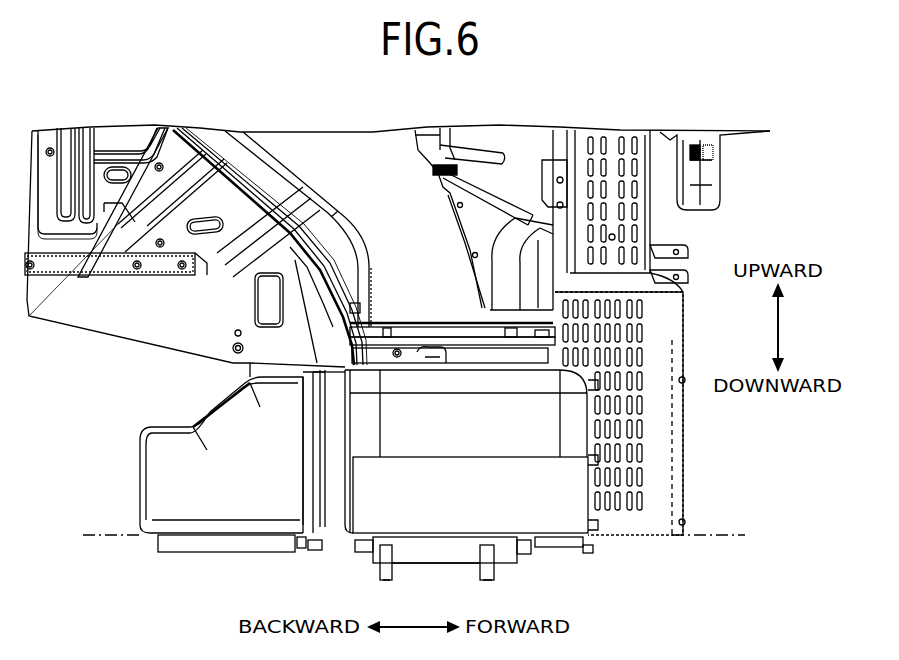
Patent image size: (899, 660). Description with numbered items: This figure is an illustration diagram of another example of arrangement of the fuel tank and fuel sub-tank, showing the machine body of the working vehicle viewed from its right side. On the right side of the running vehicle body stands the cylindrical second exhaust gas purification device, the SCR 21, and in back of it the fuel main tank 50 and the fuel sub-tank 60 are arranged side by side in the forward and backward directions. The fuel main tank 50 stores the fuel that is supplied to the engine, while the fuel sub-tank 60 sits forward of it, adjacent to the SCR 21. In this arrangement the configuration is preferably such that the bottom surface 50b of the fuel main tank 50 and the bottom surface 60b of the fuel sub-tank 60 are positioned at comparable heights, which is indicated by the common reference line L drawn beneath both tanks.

The second exhaust gas purification device (SCR) 21 is at (672, 417).
The fuel tank (fuel main tank) 50 is at (180, 421).
The bottom surface of the fuel main tank 50b is at (213, 537).
The fuel sub-tank 60 is at (490, 362).
The bottom surface of the fuel sub-tank 60b is at (493, 537).
The reference line L is at (712, 535).